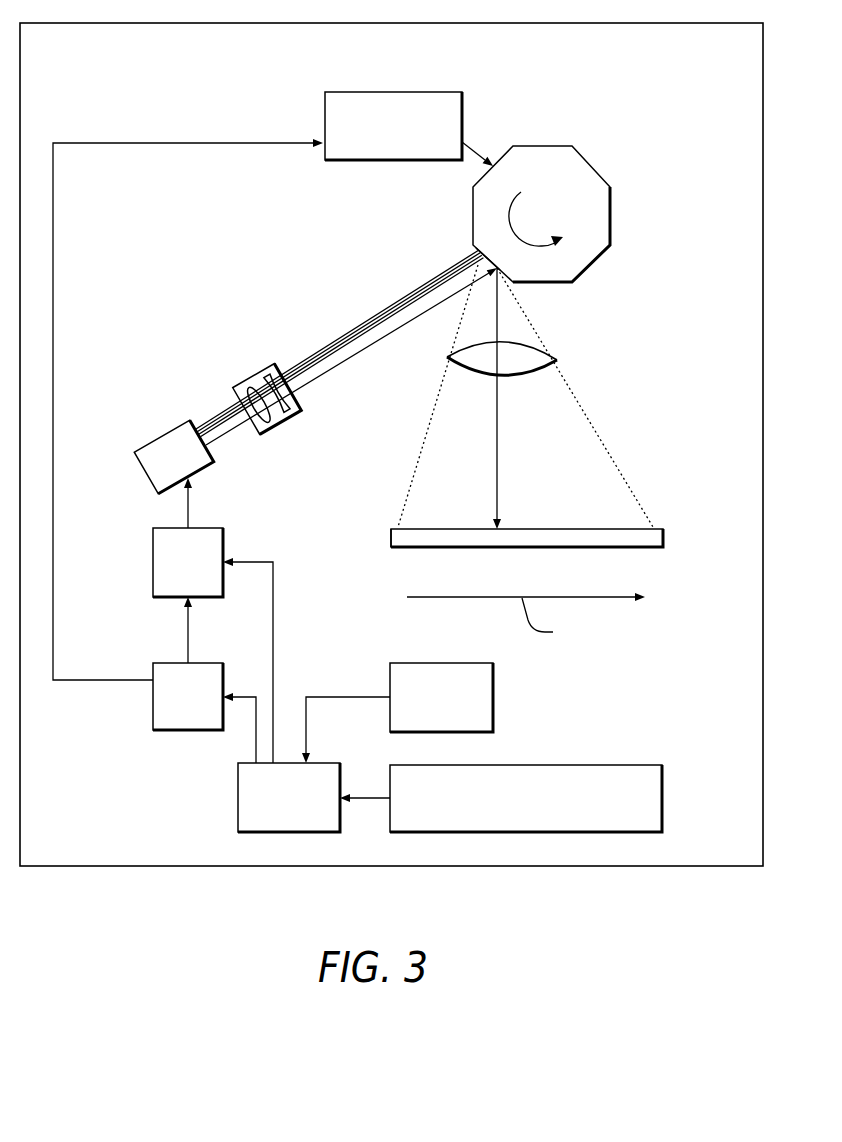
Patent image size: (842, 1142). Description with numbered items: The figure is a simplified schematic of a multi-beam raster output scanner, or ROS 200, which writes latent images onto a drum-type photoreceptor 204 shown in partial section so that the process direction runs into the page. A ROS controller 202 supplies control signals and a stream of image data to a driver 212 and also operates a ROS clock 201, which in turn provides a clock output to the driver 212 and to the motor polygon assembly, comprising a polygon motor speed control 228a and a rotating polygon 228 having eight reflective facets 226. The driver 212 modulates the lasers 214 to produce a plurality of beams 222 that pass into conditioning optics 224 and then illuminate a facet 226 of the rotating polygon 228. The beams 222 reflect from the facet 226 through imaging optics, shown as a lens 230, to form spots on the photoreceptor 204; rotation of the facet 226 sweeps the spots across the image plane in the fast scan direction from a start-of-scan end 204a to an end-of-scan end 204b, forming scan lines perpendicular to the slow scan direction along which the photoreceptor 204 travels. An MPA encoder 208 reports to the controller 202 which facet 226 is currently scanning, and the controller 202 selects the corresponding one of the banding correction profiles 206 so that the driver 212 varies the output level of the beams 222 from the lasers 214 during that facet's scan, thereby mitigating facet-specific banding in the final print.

The raster output scanner (ROS) 200 is at (394, 22).
The polygon motor speed control 228a is at (325, 110).
The rotating polygon 228 is at (610, 207).
The facet 226 is at (473, 232).
The beams 222 is at (223, 428).
The conditioning optics 224 is at (277, 430).
The lasers 214 is at (135, 456).
The imaging optics (lens) 230 is at (447, 357).
The photoreceptor 204 is at (668, 520).
The start of scan (SOS) end of photoreceptor 204a is at (391, 540).
The end of scan (EOS) end of photoreceptor 204b is at (663, 540).
The driver 212 is at (153, 563).
The ROS clock 201 is at (153, 713).
The ROS controller 202 is at (238, 798).
The MPA encoder 208 is at (493, 700).
The banding correction profiles 206 is at (662, 800).